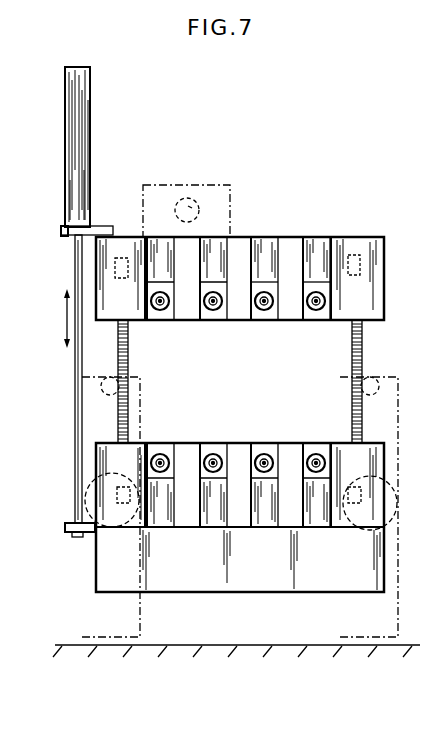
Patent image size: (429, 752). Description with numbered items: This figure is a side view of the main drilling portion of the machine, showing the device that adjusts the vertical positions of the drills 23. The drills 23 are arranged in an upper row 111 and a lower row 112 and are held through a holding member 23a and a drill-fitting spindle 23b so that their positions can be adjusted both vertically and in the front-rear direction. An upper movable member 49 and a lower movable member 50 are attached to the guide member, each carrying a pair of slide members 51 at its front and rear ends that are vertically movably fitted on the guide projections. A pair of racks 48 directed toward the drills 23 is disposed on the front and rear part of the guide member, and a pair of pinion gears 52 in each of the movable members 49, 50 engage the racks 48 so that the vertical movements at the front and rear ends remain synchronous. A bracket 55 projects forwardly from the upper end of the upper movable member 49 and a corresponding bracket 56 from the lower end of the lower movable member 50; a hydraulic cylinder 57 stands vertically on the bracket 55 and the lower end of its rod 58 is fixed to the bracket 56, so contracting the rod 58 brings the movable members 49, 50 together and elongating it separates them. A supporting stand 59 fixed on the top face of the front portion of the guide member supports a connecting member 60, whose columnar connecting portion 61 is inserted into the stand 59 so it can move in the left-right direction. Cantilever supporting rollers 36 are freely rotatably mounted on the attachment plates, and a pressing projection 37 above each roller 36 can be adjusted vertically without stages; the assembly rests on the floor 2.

The floor 2 is at (405, 645).
The drills 23 is at (203, 308).
The holding member 23a is at (310, 314).
The drill-fitting spindle 23b is at (316, 288).
The supporting rollers 36 is at (90, 493).
The pressing projection 37 is at (82, 389).
The racks 48 is at (128, 352).
The upper movable member 49 is at (240, 313).
The lower movable member 50 is at (193, 452).
The slide members 51 is at (357, 240).
The pinion gears 52 is at (118, 278).
The bracket 55 is at (100, 227).
The bracket 56 is at (67, 528).
The hydraulic cylinder 57 is at (86, 132).
The rod 58 is at (75, 366).
The supporting stand 59 is at (163, 185).
The connecting member 60 is at (190, 206).
The columnar connecting portion 61 is at (189, 198).
The upper row of drills 111 is at (264, 292).
The lower row of drills 112 is at (268, 455).